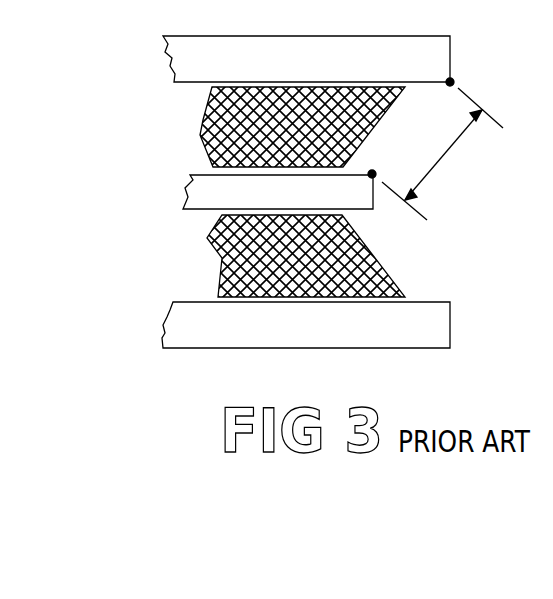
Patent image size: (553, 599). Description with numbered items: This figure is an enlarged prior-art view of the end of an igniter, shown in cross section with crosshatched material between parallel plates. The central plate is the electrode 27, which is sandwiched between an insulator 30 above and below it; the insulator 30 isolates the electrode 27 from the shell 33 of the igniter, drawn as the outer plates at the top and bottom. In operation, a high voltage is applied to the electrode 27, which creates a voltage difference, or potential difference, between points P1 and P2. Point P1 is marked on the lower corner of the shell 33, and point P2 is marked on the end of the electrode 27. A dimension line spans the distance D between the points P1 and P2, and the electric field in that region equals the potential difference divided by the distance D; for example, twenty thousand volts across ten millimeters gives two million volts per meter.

The insulator 30 is at (205, 125).
The electrode 27 is at (278, 205).
The shell 33 is at (393, 349).
The point P1 is at (456, 79).
The point P2 is at (376, 172).
The distance D is at (444, 157).